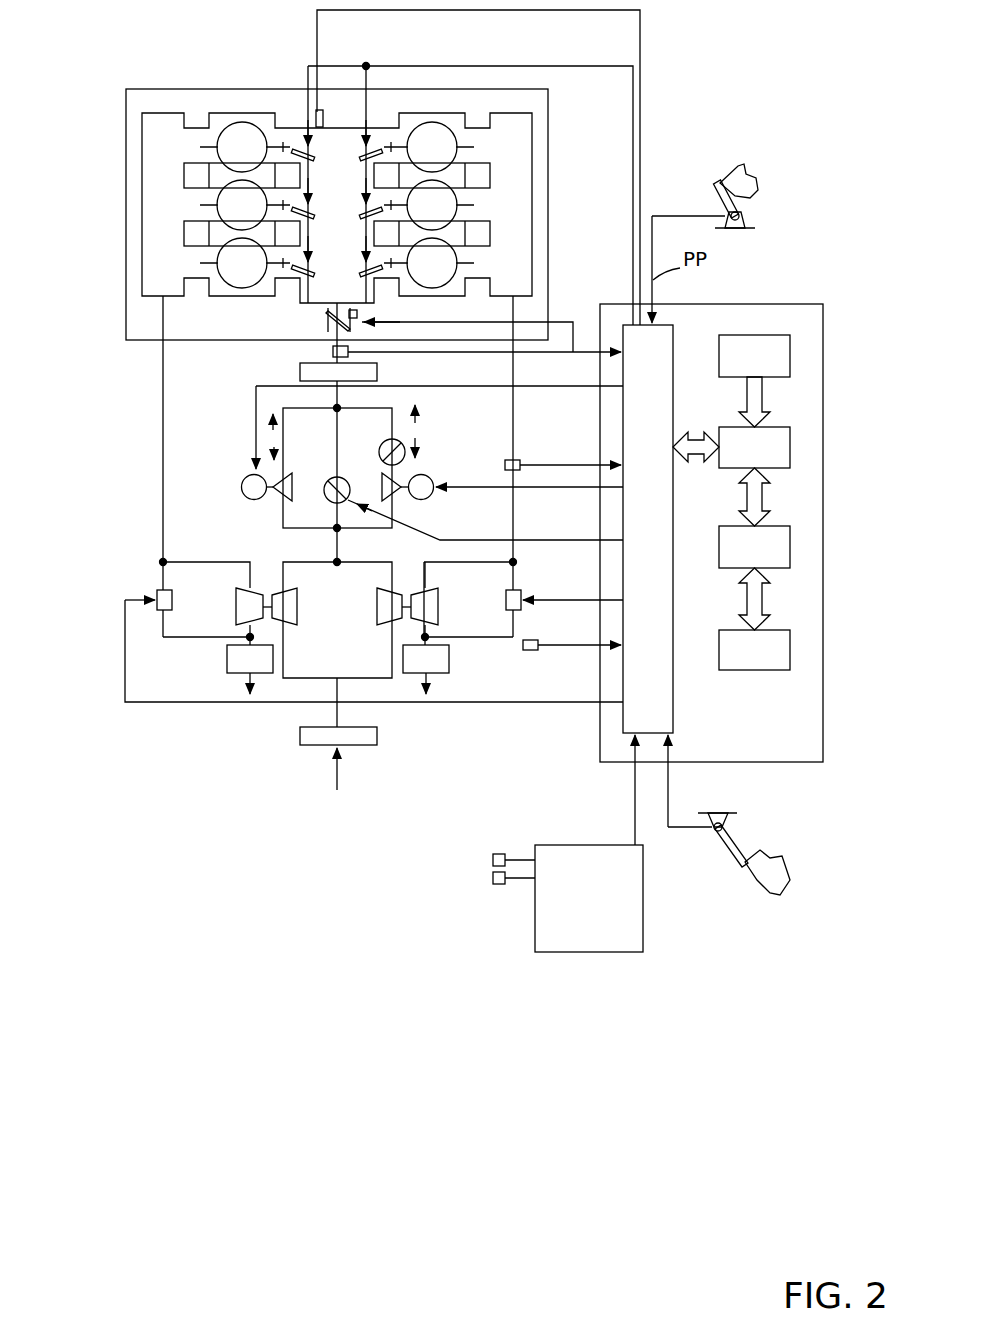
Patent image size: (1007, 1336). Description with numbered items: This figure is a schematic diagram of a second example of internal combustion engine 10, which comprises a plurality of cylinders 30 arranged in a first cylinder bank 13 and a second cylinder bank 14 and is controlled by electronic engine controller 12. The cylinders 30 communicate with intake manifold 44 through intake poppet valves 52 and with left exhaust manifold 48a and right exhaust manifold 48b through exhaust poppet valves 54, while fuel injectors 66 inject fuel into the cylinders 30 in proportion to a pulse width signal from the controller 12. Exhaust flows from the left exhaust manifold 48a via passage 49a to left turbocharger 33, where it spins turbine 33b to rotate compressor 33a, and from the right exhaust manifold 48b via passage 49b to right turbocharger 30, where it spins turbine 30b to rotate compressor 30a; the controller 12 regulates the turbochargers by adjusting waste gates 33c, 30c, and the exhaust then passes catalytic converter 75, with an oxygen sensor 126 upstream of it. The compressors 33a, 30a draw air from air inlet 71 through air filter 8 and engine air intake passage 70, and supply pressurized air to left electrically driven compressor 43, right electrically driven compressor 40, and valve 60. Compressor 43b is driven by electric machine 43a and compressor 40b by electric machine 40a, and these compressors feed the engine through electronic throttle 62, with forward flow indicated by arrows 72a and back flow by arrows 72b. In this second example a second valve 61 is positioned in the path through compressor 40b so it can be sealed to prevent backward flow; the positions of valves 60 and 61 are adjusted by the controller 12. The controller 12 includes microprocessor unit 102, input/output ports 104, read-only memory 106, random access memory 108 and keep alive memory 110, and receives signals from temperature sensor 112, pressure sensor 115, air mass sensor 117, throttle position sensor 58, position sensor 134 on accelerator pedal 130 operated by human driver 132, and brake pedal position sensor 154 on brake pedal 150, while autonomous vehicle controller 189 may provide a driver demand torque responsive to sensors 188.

The air filter 8 is at (351, 727).
The internal combustion engine 10 is at (549, 104).
The electronic engine controller 12 is at (313, 362).
The first cylinder bank 13 is at (238, 72).
The second cylinder bank 14 is at (451, 58).
The cylinder 30 is at (466, 646).
The compressor 30a is at (386, 588).
The turbine 30b is at (430, 590).
The waste gate 30c is at (515, 590).
The left turbocharger 33 is at (217, 652).
The compressor 33a is at (284, 590).
The turbine 33b is at (250, 588).
The waste gate 33c is at (161, 590).
The right electrically driven compressor 40 is at (423, 510).
The electric machine 40a is at (432, 481).
The right compressor 40b is at (402, 478).
The left electrically driven compressor 43 is at (268, 504).
The electric machine 43a is at (251, 474).
The compressor 43b is at (305, 468).
The intake manifold 44 is at (323, 117).
The left exhaust manifold 48a is at (142, 219).
The right exhaust manifold 48b is at (532, 219).
The passage 49a is at (163, 425).
The passage 49b is at (513, 424).
The intake poppet valve 52 is at (282, 141).
The exhaust poppet valve 54 is at (202, 146).
The throttle position sensor 58 is at (357, 315).
The valve 60 is at (473, 507).
The second valve 61 is at (404, 441).
The electronic throttle 62 is at (323, 323).
The fuel injector 66 is at (336, 218).
The engine air intake passage 70 is at (308, 394).
The air inlet 71 is at (339, 773).
The forward air flow arrows 72a is at (270, 426).
The back flow arrows 72b is at (272, 450).
The catalytic converter 75 is at (338, 669).
The microprocessor unit 102 is at (791, 447).
The input/output ports 104 is at (674, 332).
The read-only memory 106 is at (791, 353).
The random access memory 108 is at (791, 547).
The keep alive memory 110 is at (791, 648).
The temperature sensor 112 is at (537, 641).
The pressure sensor 115 is at (320, 110).
The air mass sensor 117 is at (350, 350).
The Universal Exhaust Gas Oxygen sensor 126 is at (522, 459).
The accelerator pedal 130 is at (713, 194).
The human driver 132 is at (762, 176).
The position sensor 134 is at (745, 217).
The brake pedal 150 is at (743, 873).
The brake pedal position sensor 154 is at (716, 832).
The sensors 188 is at (486, 859).
The autonomous vehicle controller 189 is at (589, 843).